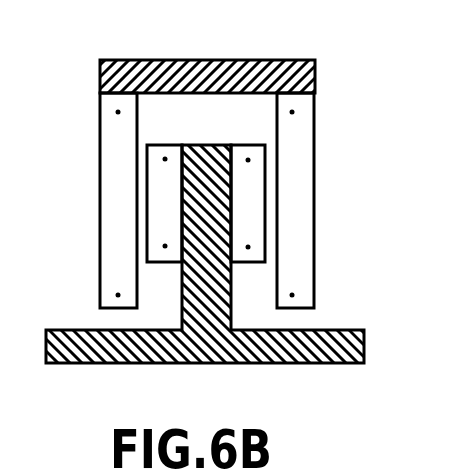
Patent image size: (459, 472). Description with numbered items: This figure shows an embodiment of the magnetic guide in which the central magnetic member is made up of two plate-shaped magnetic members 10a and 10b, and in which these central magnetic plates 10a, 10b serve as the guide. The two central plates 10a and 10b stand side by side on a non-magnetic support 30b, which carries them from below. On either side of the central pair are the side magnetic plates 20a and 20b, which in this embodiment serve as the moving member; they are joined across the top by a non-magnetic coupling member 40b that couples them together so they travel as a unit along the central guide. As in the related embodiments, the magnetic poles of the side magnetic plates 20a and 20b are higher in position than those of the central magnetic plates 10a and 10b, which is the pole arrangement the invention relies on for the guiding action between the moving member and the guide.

The plate-shaped magnetic member 10a is at (153, 180).
The plate-shaped magnetic member 10b is at (262, 172).
The magnetic plate 20a is at (108, 200).
The magnetic plate 20b is at (306, 215).
The non-magnetic support 30b is at (316, 364).
The non-magnetic coupling member 40b is at (267, 60).